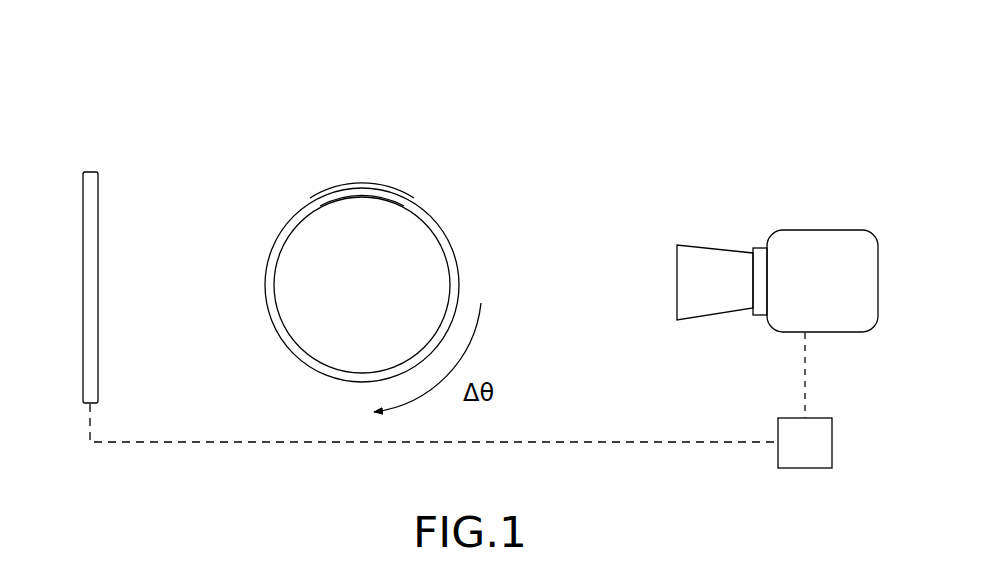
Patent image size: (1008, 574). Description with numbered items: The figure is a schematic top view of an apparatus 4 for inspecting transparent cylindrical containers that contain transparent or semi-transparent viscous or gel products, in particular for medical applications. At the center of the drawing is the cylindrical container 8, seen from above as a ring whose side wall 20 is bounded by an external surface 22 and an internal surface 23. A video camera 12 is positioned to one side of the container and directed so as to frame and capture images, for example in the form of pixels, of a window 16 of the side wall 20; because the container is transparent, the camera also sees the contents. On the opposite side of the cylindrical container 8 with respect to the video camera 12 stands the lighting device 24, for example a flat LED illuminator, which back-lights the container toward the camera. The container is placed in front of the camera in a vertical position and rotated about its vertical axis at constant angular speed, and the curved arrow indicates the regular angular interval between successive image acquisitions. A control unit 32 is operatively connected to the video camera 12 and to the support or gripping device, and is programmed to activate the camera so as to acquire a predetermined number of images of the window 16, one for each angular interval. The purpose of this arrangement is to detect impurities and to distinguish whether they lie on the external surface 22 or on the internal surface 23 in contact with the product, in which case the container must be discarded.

The apparatus 4 is at (324, 74).
The cylindrical container 8 is at (427, 192).
The video camera 12 is at (823, 226).
The window 16 is at (473, 270).
The side wall 20 is at (318, 192).
The external surface 22 is at (340, 186).
The internal surface 23 is at (353, 201).
The lighting device 24 is at (90, 168).
The control unit 32 is at (461, 400).